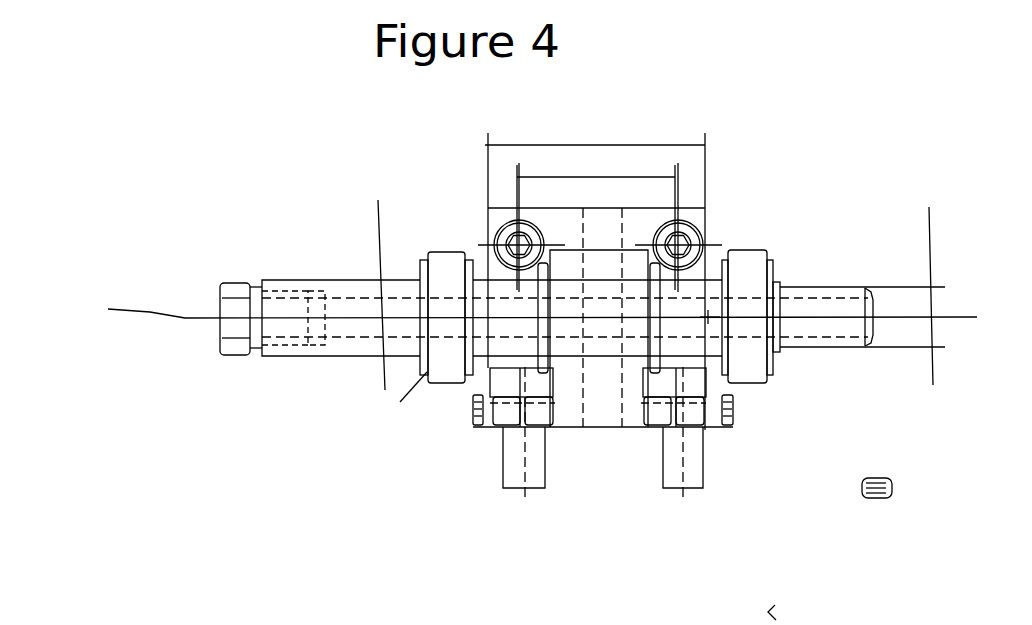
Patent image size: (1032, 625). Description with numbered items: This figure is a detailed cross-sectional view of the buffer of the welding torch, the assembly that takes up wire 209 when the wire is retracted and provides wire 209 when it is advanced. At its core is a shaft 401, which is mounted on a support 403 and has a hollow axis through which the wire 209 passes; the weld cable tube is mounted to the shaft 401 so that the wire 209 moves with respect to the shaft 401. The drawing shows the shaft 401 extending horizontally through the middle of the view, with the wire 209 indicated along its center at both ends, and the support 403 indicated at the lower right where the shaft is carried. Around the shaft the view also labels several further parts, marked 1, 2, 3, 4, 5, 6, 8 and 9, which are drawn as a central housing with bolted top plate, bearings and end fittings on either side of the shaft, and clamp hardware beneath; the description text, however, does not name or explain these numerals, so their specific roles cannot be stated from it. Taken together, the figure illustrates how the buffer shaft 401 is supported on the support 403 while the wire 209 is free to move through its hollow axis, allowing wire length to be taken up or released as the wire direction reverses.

The housing 1 is at (635, 220).
The shaft sleeve 2 is at (278, 297).
The bearing 3 is at (443, 253).
The end cap 4 is at (232, 290).
The bearing plate 5 is at (538, 318).
The center block 6 is at (593, 273).
The clamp nut 8 is at (482, 425).
The bolt 9 is at (683, 237).
The wire 209 is at (970, 417).
The shaft 401 is at (827, 283).
The support 403 is at (697, 463).